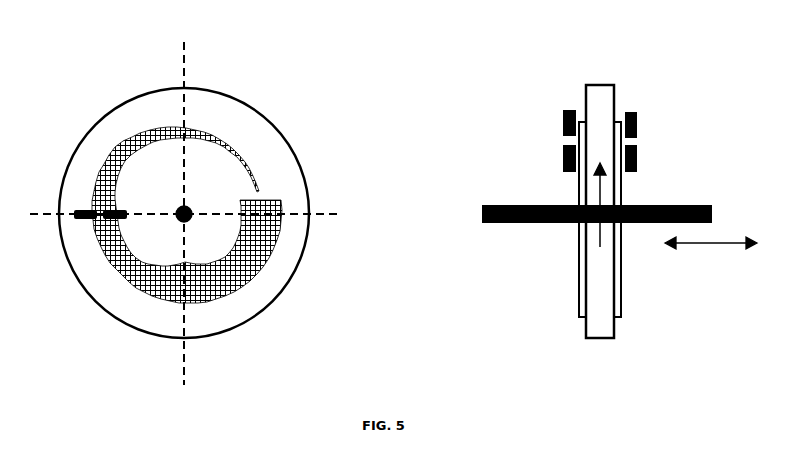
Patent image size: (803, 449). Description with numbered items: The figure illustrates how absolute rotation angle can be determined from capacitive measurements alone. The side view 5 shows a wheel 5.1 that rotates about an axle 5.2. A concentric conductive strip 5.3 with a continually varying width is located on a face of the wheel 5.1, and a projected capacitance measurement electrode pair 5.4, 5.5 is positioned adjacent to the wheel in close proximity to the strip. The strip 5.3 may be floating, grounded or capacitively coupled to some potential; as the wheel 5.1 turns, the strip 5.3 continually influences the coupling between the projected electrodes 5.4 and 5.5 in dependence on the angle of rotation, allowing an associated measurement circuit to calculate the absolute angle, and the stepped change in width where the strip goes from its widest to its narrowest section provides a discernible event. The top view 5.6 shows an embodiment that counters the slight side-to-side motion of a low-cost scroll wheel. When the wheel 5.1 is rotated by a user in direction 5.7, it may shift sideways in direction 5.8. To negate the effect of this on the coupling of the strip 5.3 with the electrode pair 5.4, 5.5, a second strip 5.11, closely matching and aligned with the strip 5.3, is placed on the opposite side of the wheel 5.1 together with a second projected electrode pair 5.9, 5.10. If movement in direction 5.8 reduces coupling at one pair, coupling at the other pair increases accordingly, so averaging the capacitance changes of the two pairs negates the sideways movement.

The side view 5 is at (68, 78).
The wheel 5.1 is at (268, 118).
The axle 5.2 is at (191, 207).
The concentric conductive strip 5.3 is at (217, 283).
The projected capacitance measurement electrode 5.4 is at (85, 222).
The projected capacitance measurement electrode 5.5 is at (120, 210).
The top view 5.6 is at (535, 75).
The rotation direction 5.7 is at (599, 198).
The side-to-side movement direction 5.8 is at (711, 252).
The second projected electrode 5.9 is at (638, 125).
The second projected electrode 5.10 is at (638, 158).
The second strip 5.11 is at (622, 298).